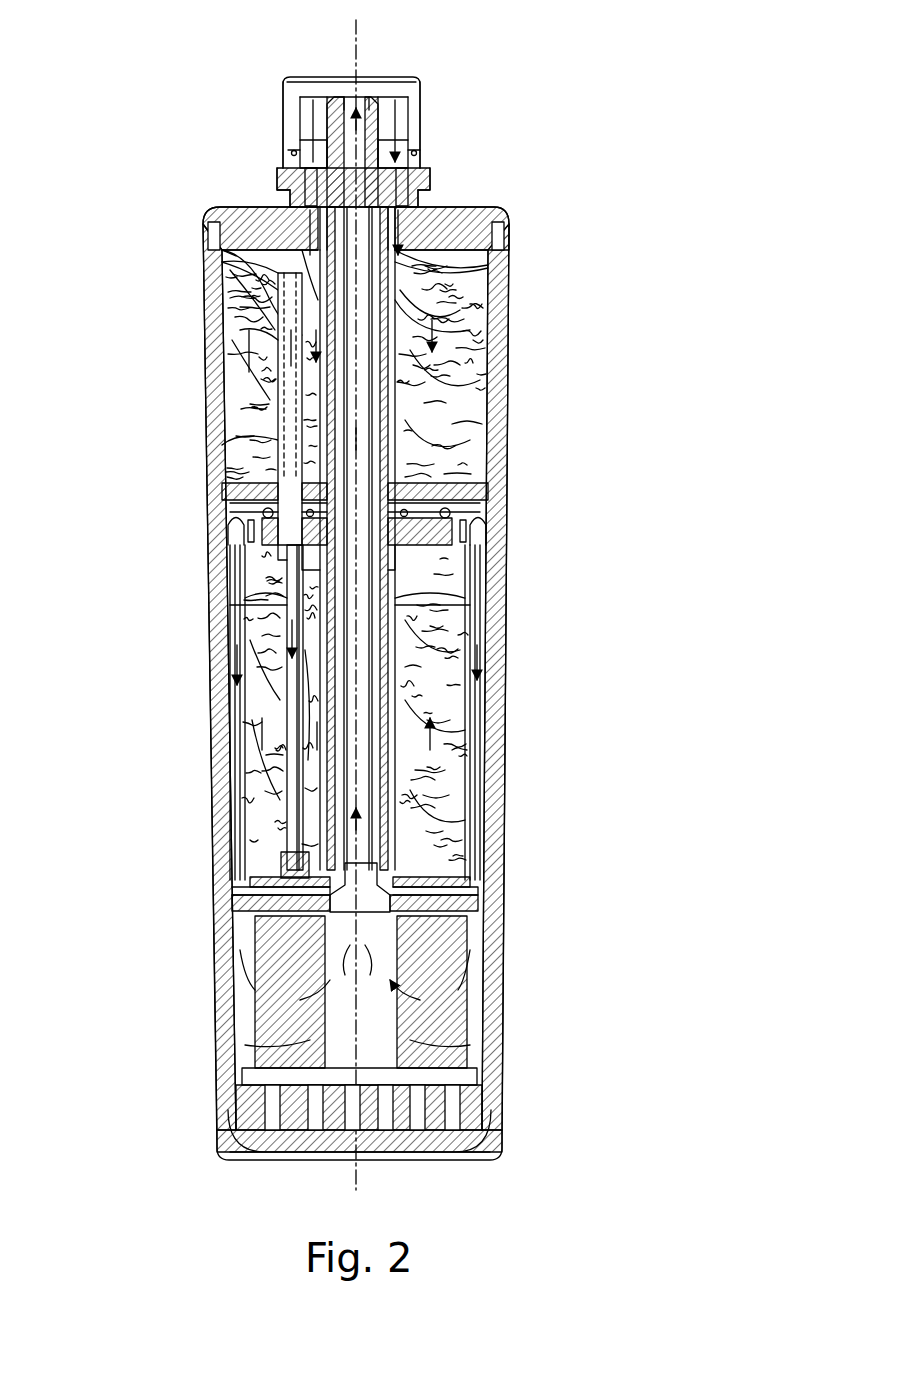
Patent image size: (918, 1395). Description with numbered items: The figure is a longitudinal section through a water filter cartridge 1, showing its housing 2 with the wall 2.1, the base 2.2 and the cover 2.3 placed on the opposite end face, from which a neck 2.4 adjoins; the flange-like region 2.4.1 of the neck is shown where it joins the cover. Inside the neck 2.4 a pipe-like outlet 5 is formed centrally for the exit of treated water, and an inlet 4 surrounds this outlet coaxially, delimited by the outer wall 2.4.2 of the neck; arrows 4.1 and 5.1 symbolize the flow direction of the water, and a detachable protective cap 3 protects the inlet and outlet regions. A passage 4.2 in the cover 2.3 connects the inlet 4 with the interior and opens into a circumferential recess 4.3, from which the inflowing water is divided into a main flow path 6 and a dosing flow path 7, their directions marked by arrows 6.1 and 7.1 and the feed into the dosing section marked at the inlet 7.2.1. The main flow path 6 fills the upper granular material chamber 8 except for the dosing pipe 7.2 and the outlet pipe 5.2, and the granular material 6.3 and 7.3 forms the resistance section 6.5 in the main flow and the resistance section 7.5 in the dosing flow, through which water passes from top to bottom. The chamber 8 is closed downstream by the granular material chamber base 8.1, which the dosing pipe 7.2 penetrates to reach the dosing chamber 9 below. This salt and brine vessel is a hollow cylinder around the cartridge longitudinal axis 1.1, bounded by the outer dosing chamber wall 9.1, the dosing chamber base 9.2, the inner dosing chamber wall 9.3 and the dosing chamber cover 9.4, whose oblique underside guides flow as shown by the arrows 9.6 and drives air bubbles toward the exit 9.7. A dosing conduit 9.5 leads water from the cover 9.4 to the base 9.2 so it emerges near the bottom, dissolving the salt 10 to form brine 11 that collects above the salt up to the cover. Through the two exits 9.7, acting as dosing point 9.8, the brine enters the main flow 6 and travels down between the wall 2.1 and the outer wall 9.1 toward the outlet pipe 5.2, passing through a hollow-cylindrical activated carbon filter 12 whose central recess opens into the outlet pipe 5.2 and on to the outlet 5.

The filter cartridge 1 is at (357, 50).
The cartridge longitudinal axis 1.1 is at (258, 1087).
The housing 2 is at (537, 540).
The wall 2.1 is at (495, 370).
The base 2.2 is at (424, 1135).
The cover 2.3 is at (480, 210).
The neck 2.4 is at (500, 98).
The connection flange 2.4.1 is at (285, 182).
The outer wall of the neck 2.4.2 is at (278, 150).
The protective cap 3 is at (307, 77).
The inlet 4 is at (300, 133).
The arrow 4.1 is at (312, 103).
The passage 4.2 is at (418, 175).
The circumferential recess 4.3 is at (293, 210).
The outlet 5 is at (362, 90).
The arrow 5.1 is at (380, 110).
The outlet pipe 5.2 is at (395, 378).
The main flow path 6 is at (280, 410).
The arrow 6.1 is at (303, 372).
The granular material 6.3 is at (248, 440).
The resistance section 6.5 is at (133, 252).
The dosing flow path 7 is at (285, 300).
The arrow 7.1 is at (308, 345).
The dosing pipe 7.2 is at (228, 262).
The inlet into the dosing section 7.2.1 is at (235, 255).
The granular material 7.3 is at (265, 330).
The resistance section 7.5 is at (70, 255).
The granular material chamber 8 is at (330, 250).
The granular material chamber base 8.1 is at (222, 497).
The dosing chamber 9 is at (268, 826).
The outer dosing chamber wall 9.1 is at (478, 772).
The dosing chamber base 9.2 is at (470, 905).
The inner dosing chamber wall 9.3 is at (258, 878).
The dosing chamber cover 9.4 is at (480, 538).
The dosing conduit 9.5 is at (290, 728).
The arrows 9.6 is at (242, 560).
The exit 9.7 is at (235, 490).
The dosing point 9.8 is at (240, 485).
The salt 10 is at (245, 655).
The brine 11 is at (235, 610).
The filter 12 is at (468, 970).